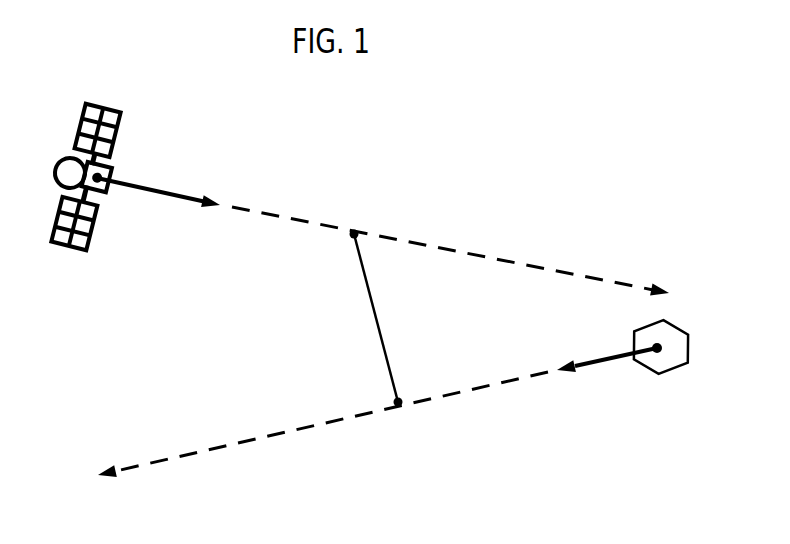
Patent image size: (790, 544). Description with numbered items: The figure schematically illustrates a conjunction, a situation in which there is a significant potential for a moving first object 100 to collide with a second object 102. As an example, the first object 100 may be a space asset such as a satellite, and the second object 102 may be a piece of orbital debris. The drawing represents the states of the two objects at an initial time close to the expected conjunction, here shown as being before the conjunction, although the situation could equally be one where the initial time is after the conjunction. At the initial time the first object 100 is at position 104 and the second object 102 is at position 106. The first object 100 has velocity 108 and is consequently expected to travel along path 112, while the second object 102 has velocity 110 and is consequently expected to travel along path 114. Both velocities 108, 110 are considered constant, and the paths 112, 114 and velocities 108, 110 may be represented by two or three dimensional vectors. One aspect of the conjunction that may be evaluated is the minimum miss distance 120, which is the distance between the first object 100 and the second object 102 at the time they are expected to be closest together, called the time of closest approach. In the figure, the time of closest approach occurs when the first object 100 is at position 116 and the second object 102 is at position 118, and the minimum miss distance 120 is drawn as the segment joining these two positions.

The first object 100 is at (53, 230).
The second object 102 is at (665, 358).
The position 104 is at (102, 192).
The position 106 is at (688, 343).
The velocity 108 is at (144, 190).
The velocity 110 is at (592, 367).
The path 112 is at (521, 265).
The path 114 is at (167, 461).
The position 116 is at (352, 228).
The position 118 is at (401, 407).
The minimum miss distance 120 is at (373, 308).